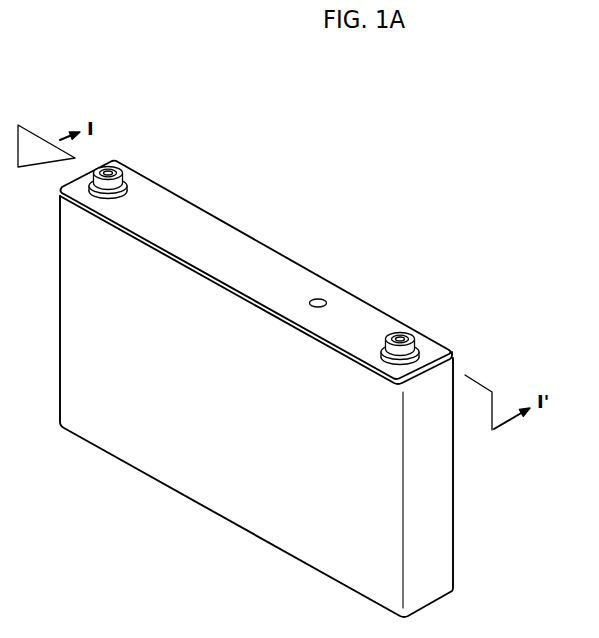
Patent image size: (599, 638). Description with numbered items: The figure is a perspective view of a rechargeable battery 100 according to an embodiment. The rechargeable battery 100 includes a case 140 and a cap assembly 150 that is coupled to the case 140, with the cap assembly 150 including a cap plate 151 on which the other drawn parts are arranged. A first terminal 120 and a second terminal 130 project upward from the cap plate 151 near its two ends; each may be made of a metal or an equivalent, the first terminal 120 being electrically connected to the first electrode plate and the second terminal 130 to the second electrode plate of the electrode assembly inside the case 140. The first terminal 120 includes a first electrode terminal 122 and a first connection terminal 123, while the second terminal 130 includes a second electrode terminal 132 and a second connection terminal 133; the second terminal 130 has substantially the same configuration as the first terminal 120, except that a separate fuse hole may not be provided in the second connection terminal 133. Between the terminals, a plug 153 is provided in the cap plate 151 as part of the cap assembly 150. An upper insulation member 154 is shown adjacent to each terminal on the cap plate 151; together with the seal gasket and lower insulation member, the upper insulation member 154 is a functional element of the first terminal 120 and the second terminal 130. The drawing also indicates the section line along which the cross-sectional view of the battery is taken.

The rechargeable battery 100 is at (456, 156).
The first terminal 120 is at (417, 317).
The first electrode terminal 122 is at (428, 329).
The first connection terminal 123 is at (402, 305).
The second terminal 130 is at (125, 150).
The second electrode terminal 132 is at (135, 163).
The second connection terminal 133 is at (114, 136).
The case 140 is at (218, 500).
The cap assembly 150 is at (263, 243).
The cap plate 151 is at (210, 227).
The plug 153 is at (318, 298).
The upper insulation member 154 is at (128, 197).